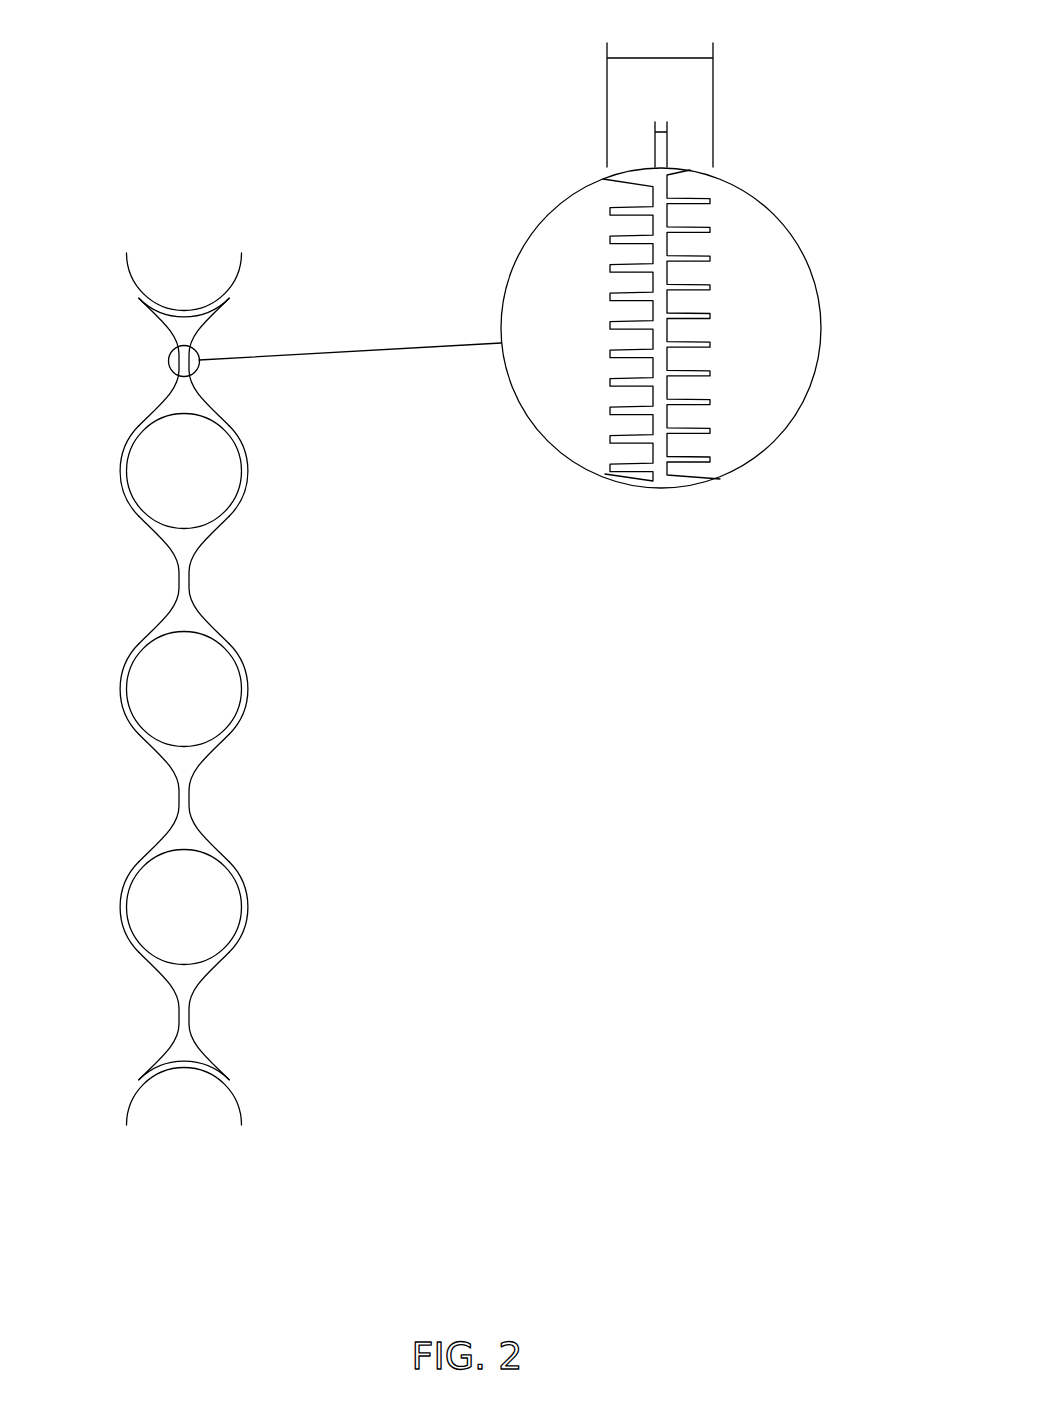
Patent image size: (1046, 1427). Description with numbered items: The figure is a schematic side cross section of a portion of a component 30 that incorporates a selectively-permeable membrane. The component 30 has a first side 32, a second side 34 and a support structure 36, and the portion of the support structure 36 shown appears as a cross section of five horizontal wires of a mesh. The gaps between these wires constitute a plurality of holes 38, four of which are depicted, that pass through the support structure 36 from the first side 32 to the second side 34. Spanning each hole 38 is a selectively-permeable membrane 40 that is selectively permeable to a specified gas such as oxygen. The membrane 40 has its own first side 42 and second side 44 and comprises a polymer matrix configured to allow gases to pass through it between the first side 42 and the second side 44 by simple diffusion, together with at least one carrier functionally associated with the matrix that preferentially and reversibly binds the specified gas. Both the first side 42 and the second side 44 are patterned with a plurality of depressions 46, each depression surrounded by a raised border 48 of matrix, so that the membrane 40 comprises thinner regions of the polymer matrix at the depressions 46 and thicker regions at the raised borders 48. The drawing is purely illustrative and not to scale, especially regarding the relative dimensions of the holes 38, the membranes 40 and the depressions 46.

The component 30 is at (464, 598).
The first side 32 is at (308, 689).
The second side 34 is at (290, 689).
The support structure 36 is at (230, 705).
The holes 38 is at (105, 385).
The selectively-permeable membrane 40 is at (173, 347).
The first side 42 is at (562, 250).
The second side 44 is at (562, 250).
The depressions 46 is at (653, 342).
The raised border 48 is at (669, 325).